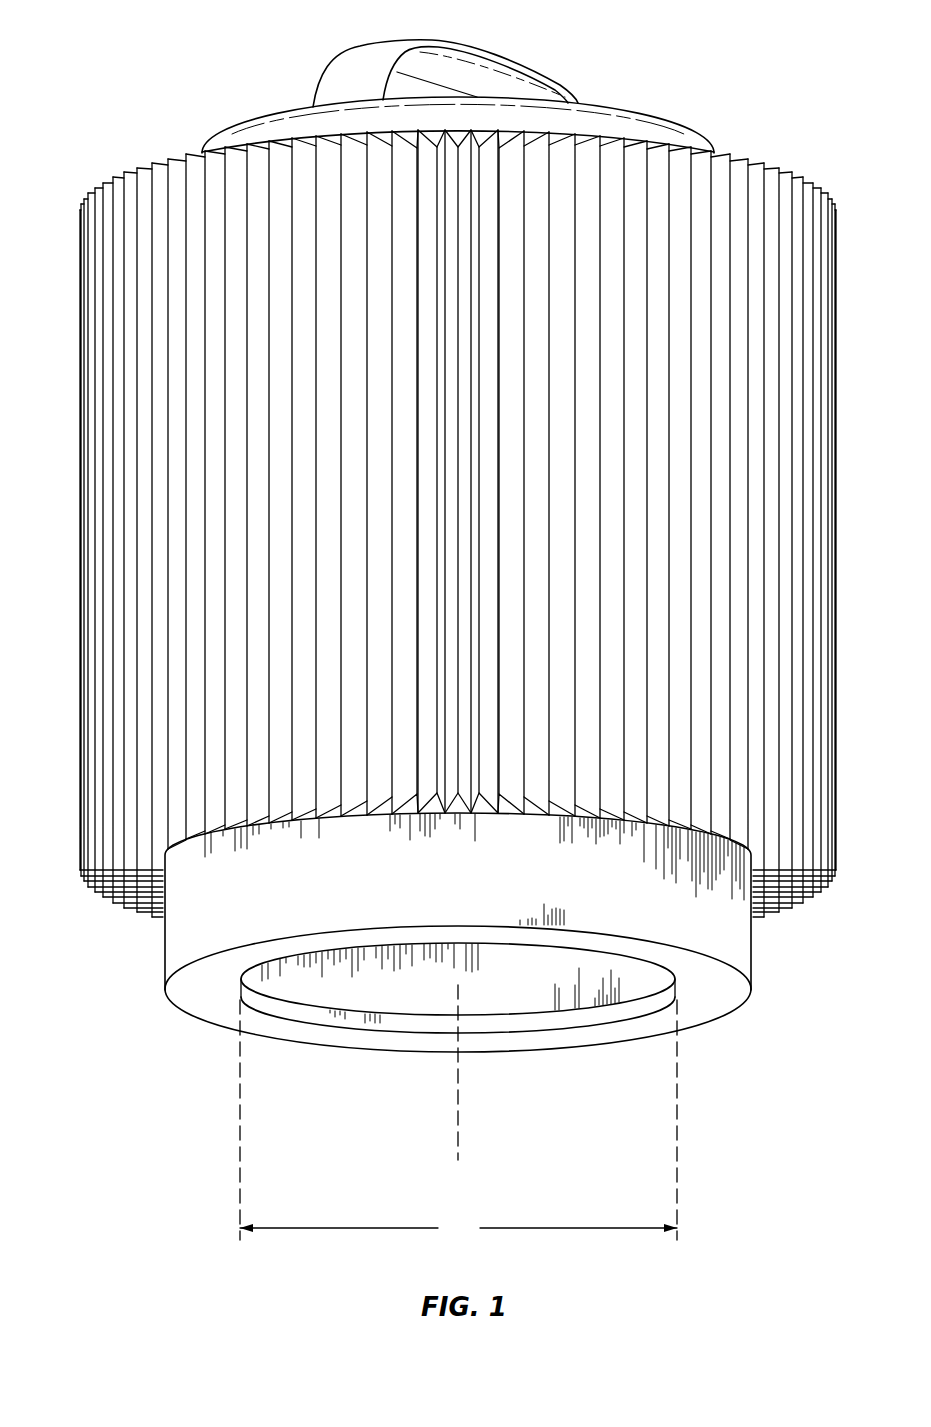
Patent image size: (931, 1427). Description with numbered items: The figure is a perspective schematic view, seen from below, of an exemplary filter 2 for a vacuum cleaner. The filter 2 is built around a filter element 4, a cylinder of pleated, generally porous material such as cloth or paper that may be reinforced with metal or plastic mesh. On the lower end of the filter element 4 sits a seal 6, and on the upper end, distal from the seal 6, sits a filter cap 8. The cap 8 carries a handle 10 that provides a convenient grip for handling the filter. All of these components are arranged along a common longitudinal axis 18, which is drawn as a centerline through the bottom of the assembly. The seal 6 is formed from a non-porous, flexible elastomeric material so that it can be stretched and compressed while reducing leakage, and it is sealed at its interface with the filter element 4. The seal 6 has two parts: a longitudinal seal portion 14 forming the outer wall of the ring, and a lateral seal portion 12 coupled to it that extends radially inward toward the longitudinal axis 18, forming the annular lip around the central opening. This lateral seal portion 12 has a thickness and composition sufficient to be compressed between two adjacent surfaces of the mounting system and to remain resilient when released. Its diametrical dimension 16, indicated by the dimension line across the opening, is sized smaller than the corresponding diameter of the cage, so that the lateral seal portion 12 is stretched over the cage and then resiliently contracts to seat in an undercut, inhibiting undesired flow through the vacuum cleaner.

The filter 2 is at (108, 44).
The filter element 4 is at (770, 188).
The seal 6 is at (155, 953).
The filter cap 8 is at (606, 108).
The handle 10 is at (438, 40).
The lateral seal portion 12 is at (695, 1012).
The longitudinal seal portion 14 is at (757, 945).
The diametrical dimension 16 is at (458, 1122).
The longitudinal axis 18 is at (460, 1096).